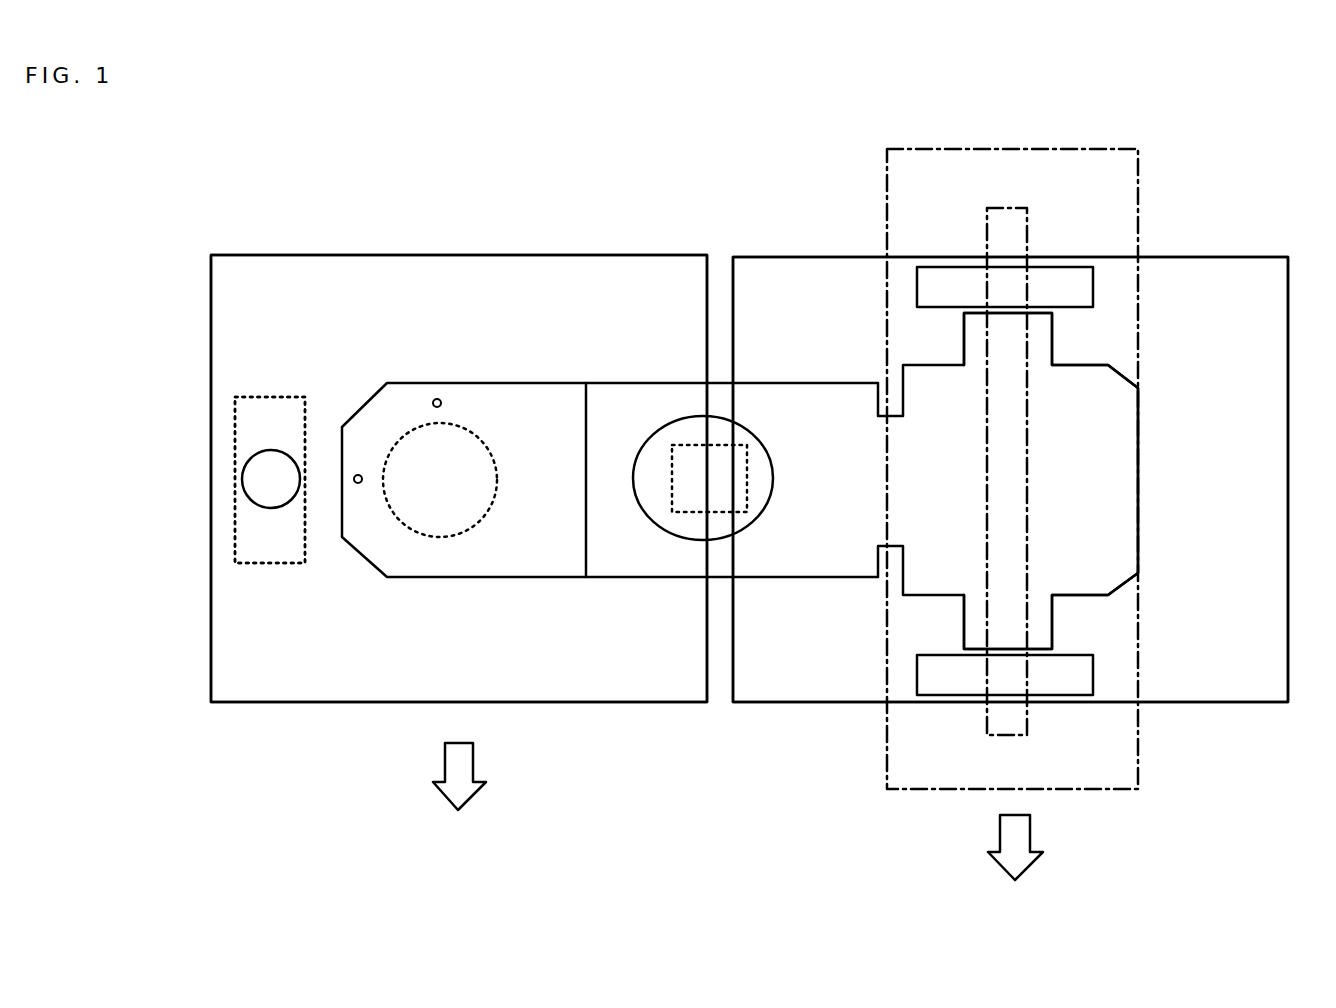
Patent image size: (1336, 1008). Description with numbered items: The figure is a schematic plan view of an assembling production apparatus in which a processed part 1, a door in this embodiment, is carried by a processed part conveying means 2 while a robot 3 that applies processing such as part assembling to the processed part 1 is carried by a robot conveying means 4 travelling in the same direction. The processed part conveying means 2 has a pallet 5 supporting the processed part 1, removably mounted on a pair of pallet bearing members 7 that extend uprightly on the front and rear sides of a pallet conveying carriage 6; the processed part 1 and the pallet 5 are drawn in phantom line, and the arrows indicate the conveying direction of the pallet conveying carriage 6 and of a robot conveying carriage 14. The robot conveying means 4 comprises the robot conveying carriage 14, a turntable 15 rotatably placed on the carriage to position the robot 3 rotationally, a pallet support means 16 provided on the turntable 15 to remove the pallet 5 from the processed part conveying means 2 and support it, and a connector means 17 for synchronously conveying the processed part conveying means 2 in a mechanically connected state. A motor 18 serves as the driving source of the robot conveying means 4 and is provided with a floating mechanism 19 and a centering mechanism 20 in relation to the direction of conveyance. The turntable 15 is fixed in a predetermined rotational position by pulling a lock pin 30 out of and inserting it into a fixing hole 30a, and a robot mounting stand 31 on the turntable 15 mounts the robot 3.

The processed part 1 is at (1027, 222).
The processed part conveying means 2 is at (1210, 215).
The robot 3 is at (668, 418).
The robot conveying means 4 is at (372, 228).
The pallet 5 is at (1140, 152).
The pallet conveying carriage 6 is at (1290, 397).
The pallet bearing members 7 is at (1093, 292).
The robot conveying carriage 14 is at (550, 255).
The turntable 15 is at (500, 383).
The pallet support means 16 is at (1052, 350).
The connector means 17 is at (682, 512).
The motor 18 is at (248, 463).
The floating mechanism 19 is at (237, 512).
The centering mechanism 20 is at (270, 480).
The lock pin 30 is at (437, 403).
The fixing hole 30a is at (441, 403).
The robot mounting stand 31 is at (612, 388).